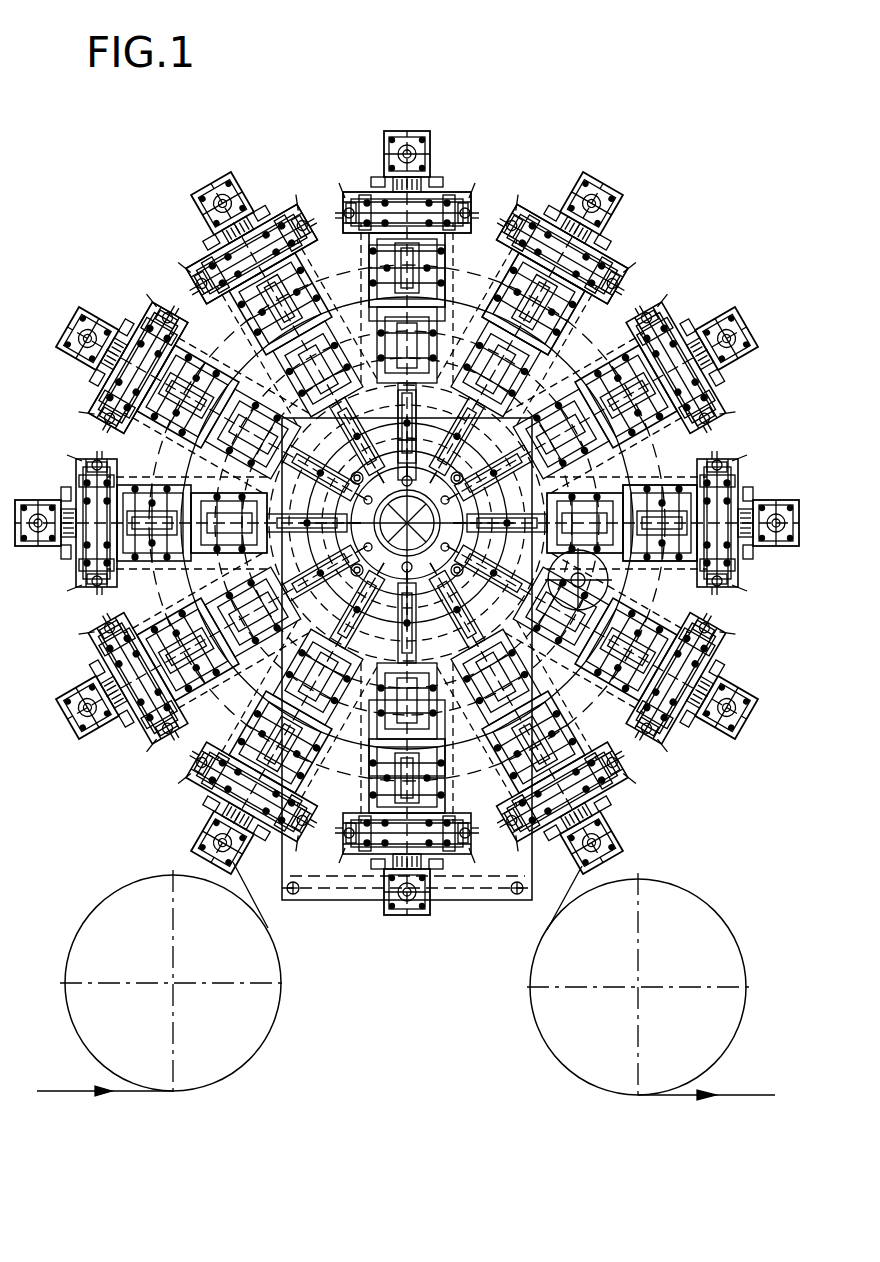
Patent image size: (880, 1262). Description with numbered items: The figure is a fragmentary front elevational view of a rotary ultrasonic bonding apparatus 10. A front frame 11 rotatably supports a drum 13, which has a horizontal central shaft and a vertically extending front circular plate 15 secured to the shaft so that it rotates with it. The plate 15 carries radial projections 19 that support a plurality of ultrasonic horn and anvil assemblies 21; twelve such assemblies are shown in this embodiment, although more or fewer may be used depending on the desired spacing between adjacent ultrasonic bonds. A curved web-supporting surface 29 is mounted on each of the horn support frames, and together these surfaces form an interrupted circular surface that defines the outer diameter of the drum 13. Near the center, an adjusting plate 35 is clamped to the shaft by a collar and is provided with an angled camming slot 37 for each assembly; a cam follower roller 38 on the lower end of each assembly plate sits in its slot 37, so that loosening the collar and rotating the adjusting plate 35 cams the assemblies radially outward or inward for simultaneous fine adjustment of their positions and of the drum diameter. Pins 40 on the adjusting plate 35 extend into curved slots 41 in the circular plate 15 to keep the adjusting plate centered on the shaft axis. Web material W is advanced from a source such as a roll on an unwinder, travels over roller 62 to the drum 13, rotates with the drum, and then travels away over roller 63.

The ultrasonic bonding apparatus 10 is at (664, 237).
The front frame 11 is at (490, 897).
The drum 13 is at (560, 372).
The front circular plate 15 is at (618, 472).
The radial projections 19 is at (300, 258).
The ultrasonic horn and anvil assemblies 21 is at (452, 126).
The curved web-supporting surface 29 is at (480, 232).
The adjusting plate 35 is at (440, 700).
The angled camming slot 37 is at (430, 382).
The cam follower roller 38 is at (400, 386).
The pins 40 is at (456, 382).
The curved slots 41 is at (545, 481).
The roller 62 is at (76, 937).
The roller 63 is at (686, 895).
The web material W is at (250, 905).